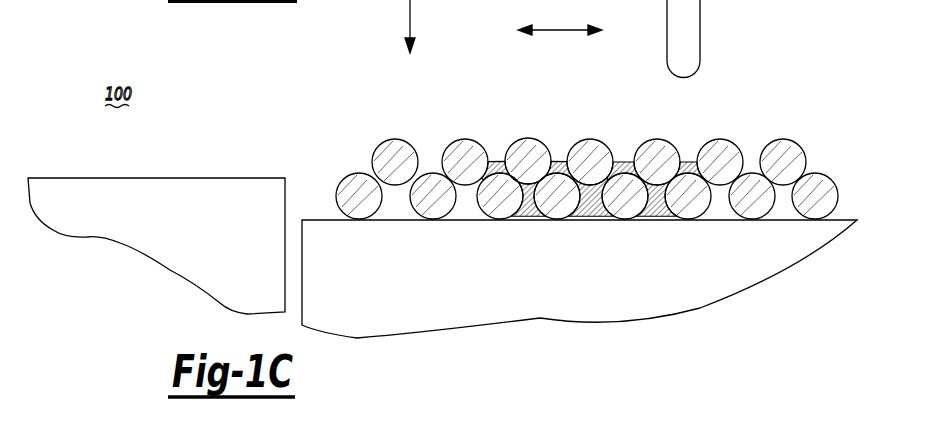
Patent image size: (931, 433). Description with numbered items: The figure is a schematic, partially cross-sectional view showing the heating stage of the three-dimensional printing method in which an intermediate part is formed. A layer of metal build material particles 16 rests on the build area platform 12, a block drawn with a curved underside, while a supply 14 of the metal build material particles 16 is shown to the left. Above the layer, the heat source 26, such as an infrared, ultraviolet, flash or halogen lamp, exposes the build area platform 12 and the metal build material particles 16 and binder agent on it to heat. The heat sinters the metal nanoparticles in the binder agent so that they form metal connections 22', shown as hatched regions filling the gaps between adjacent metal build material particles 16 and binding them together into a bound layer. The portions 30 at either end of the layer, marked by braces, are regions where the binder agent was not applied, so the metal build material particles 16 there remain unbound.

The build area platform 12 is at (698, 287).
The supply 14 is at (102, 220).
The metal build material particles 16 is at (557, 198).
The metal connections 22' is at (593, 153).
The heat source 26 is at (700, 32).
The portions 30 is at (490, 127).